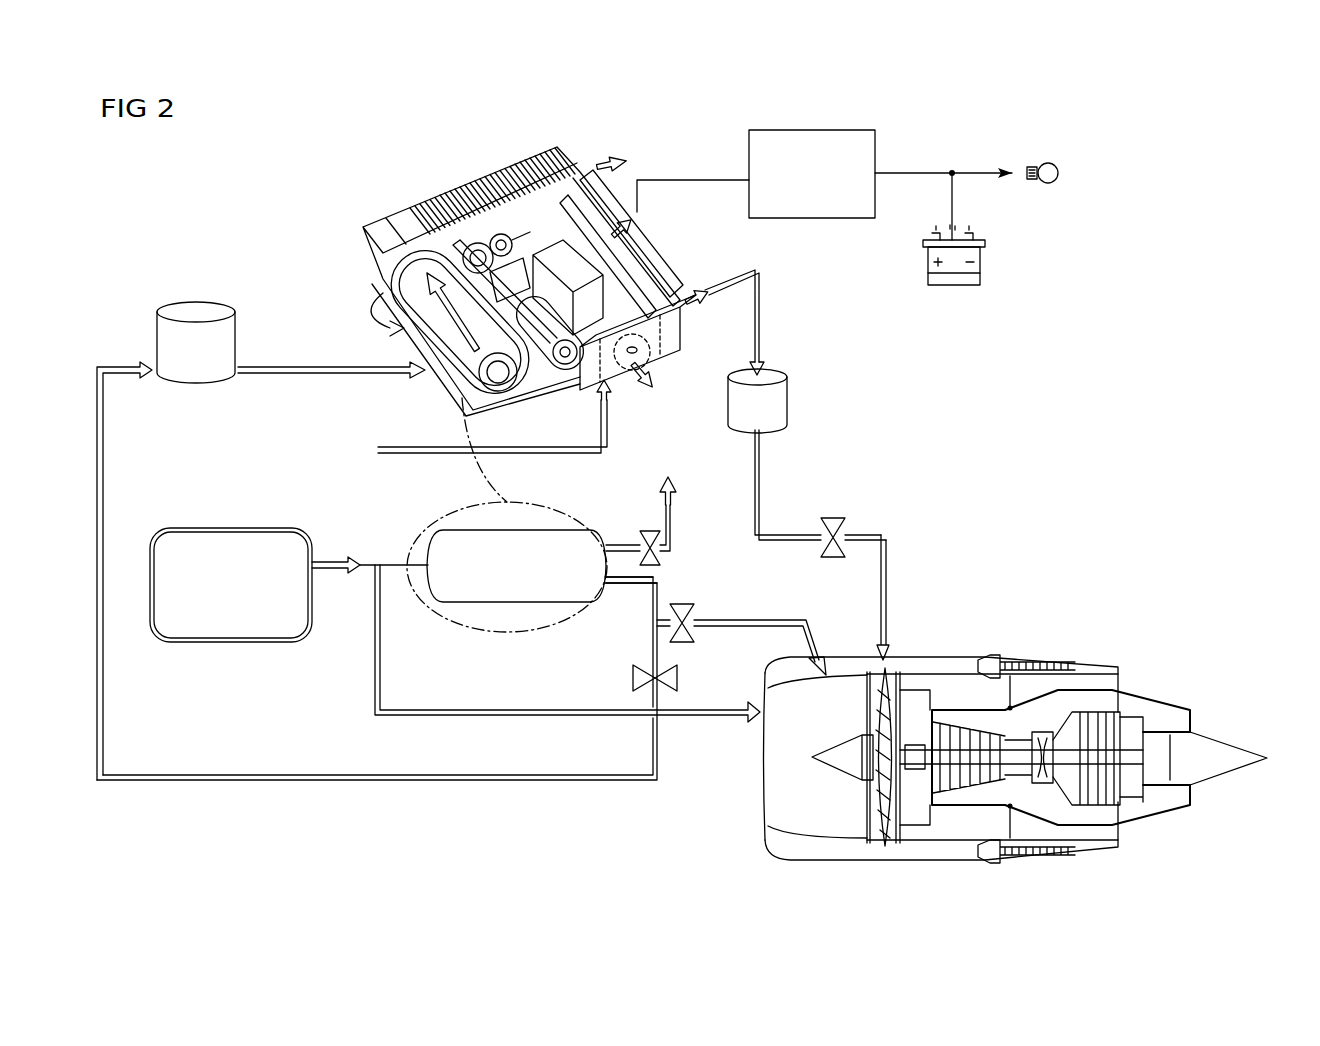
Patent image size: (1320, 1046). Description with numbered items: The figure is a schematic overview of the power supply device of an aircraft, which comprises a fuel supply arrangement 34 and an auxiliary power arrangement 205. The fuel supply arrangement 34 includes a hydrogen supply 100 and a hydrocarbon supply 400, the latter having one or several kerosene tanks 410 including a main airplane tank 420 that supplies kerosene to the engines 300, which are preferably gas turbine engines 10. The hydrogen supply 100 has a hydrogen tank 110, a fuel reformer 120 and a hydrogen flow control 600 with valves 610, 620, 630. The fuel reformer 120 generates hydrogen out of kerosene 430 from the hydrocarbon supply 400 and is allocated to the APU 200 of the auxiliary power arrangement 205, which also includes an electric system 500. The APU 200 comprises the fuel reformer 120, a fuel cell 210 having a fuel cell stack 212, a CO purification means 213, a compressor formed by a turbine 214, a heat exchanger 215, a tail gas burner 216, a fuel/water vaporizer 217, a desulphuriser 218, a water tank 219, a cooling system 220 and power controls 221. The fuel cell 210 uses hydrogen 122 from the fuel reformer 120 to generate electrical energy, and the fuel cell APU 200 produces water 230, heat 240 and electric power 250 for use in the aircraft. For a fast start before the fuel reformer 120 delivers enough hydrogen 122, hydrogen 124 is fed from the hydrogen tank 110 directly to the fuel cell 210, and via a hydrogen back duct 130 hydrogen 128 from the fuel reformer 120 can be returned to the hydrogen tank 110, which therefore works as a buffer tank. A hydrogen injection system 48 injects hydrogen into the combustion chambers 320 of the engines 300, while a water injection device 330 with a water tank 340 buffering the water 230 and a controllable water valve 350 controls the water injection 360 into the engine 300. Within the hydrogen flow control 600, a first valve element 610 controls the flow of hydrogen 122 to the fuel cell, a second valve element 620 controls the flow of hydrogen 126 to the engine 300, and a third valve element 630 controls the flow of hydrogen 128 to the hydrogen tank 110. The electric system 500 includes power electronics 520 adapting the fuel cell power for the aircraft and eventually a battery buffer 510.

The gas turbine engine 10 is at (1016, 719).
The fuel supply arrangement 34 is at (155, 465).
The hydrogen injection system 48 is at (788, 606).
The hydrogen supply 100 is at (277, 412).
The hydrogen tank 110 is at (228, 392).
The fuel reformer 120 is at (521, 595).
The hydrogen 122 is at (660, 495).
The hydrogen 124 is at (320, 373).
The hydrogen 126 is at (747, 620).
The hydrogen 128 is at (560, 780).
The hydrogen back duct 130 is at (200, 775).
The APU 200 is at (388, 186).
The auxiliary power arrangement 205 is at (835, 125).
The fuel cell 210 is at (492, 174).
The fuel cell stack 212 is at (524, 163).
The CO purification means 213 is at (382, 285).
The turbine 214 is at (443, 250).
The heat exchanger 215 is at (482, 228).
The tail gas burner 216 is at (558, 371).
The fuel/water vaporizer 217 is at (437, 347).
The desulphuriser 218 is at (625, 270).
The water tank 219 is at (626, 291).
The cooling system 220 is at (662, 359).
The power controls 221 is at (685, 282).
The water 230 is at (610, 162).
The heat 240 is at (646, 395).
The electric power 250 is at (692, 178).
The engine 300 is at (1007, 639).
The combustion chamber 320 is at (1041, 740).
The water injection device 330 is at (875, 545).
The water tank 340 is at (788, 402).
The controllable water valve 350 is at (845, 522).
The water injection 360 is at (886, 584).
The hydrocarbon supply 400 is at (218, 522).
The kerosene tank 410 is at (231, 580).
The main airplane tank 420 is at (228, 628).
The kerosene 430 is at (339, 570).
The electric system 500 is at (904, 152).
The battery buffer 510 is at (984, 268).
The power electronics 520 is at (811, 220).
The hydrogen flow control 600 is at (690, 542).
The first valve element 610 is at (665, 559).
The second valve element 620 is at (698, 640).
The third valve element 630 is at (643, 663).